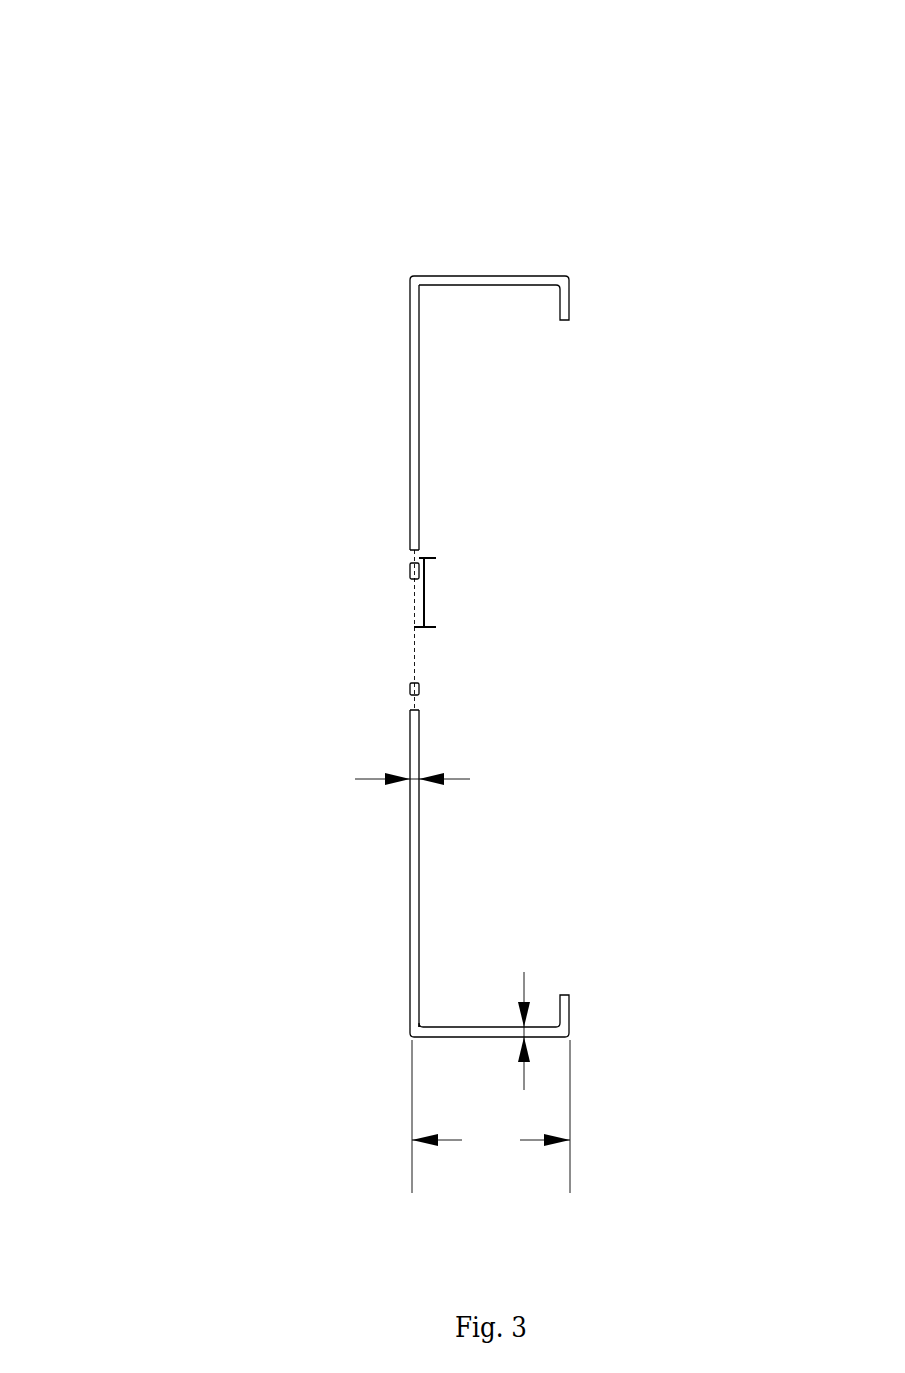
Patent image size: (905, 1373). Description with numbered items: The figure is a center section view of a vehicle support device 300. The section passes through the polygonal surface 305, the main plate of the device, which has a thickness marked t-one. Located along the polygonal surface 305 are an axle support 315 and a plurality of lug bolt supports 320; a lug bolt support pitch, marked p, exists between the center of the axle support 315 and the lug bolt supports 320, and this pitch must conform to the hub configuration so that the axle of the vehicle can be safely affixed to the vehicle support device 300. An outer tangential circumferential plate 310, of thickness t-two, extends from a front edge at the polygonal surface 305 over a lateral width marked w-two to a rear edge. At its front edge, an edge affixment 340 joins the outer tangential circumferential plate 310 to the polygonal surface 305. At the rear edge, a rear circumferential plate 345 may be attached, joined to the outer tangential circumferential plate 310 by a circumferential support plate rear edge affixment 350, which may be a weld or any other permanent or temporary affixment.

The vehicle support device 300 is at (148, 56).
The polygonal surface 305 is at (393, 324).
The outer tangential circumferential plate 310 is at (520, 262).
The rear circumferential plate 345 is at (590, 289).
The circumferential support plate rear edge affixment 350 is at (546, 312).
The axle support 315 is at (385, 631).
The lug bolt supports 320 is at (385, 706).
The edge affixment 340 is at (385, 1036).